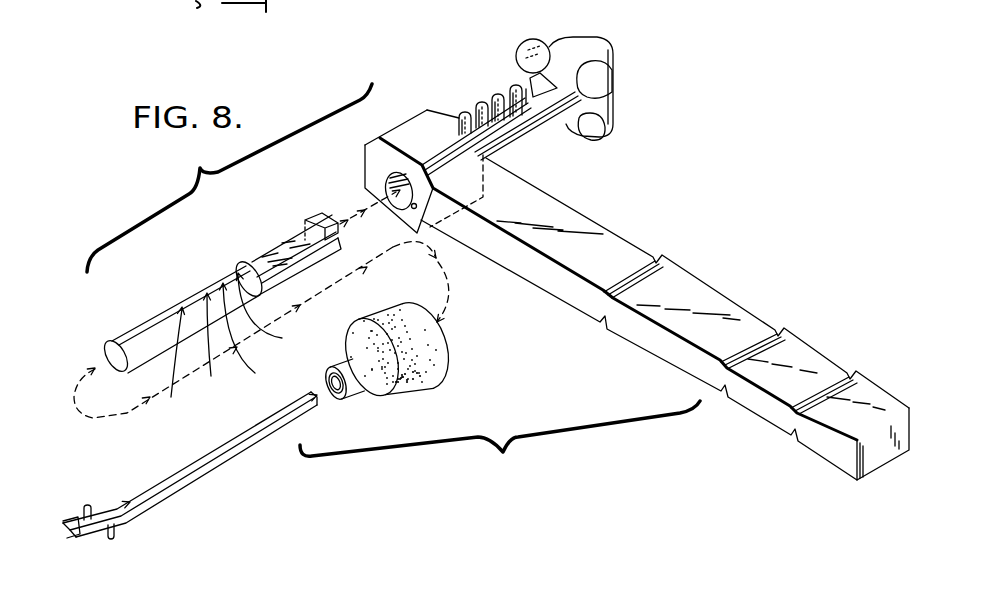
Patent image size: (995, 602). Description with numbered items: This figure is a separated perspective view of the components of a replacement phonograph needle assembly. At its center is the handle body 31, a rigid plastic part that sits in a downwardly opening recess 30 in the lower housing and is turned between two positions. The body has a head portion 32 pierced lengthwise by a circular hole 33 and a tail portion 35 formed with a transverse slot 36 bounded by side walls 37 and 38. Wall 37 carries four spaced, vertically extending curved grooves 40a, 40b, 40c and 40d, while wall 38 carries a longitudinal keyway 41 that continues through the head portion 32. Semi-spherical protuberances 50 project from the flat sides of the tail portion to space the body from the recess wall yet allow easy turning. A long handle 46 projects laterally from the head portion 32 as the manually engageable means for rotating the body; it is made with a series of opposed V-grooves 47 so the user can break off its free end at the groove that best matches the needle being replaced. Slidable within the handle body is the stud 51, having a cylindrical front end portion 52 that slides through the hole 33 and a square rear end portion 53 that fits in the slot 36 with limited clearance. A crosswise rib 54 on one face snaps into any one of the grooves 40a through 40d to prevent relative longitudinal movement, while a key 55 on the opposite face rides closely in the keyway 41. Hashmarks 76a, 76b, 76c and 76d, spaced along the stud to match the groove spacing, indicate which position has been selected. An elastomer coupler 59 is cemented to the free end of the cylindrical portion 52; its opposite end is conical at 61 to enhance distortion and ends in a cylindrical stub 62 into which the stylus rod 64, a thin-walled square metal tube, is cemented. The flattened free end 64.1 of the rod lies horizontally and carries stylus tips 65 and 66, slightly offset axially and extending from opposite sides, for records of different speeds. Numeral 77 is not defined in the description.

The recess 30 is at (549, 36).
The handle body 31 is at (601, 74).
The head portion 32 is at (612, 271).
The circular hole 33 is at (385, 187).
The tail portion 35 is at (567, 141).
The slot 36 is at (552, 72).
The slot side wall 37 is at (514, 88).
The slot side wall 38 is at (512, 113).
The curved groove 40a is at (459, 118).
The curved groove 40b is at (477, 108).
The curved groove 40c is at (496, 96).
The curved groove 40d is at (535, 38).
The keyway 41 is at (411, 207).
The handle 46 is at (708, 298).
The opposed V-grooves 47 is at (657, 259).
The semi-spherical protuberances 50 is at (592, 80).
The stud 51 is at (220, 268).
The cylindrical front end portion 52 is at (137, 328).
The rear end portion 53 is at (284, 228).
The rib 54 is at (304, 218).
The key 55 is at (294, 270).
The coupler 59 is at (443, 352).
The conical end 61 is at (393, 395).
The cylindrical stub 62 is at (357, 396).
The stylus rod 64 is at (169, 483).
The flattened free end 64.1 is at (70, 519).
The stylus tip 65 is at (89, 504).
The stylus tip 66 is at (113, 538).
The hashmark 76a is at (179, 365).
The hashmark 76b is at (221, 346).
The hashmark 76c is at (252, 336).
The hashmark 76d is at (279, 311).
The head 77 is at (363, 156).